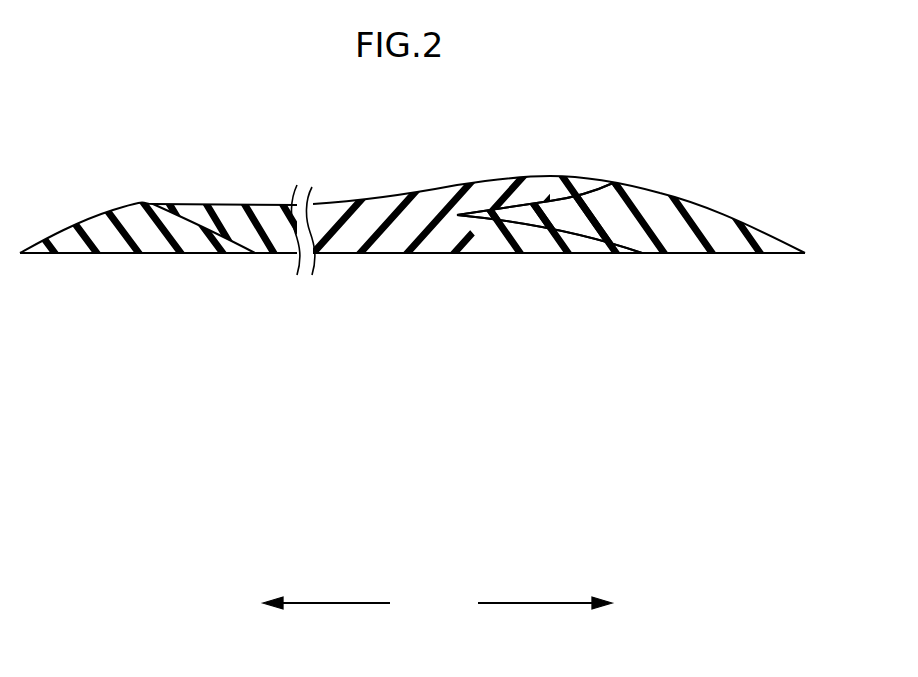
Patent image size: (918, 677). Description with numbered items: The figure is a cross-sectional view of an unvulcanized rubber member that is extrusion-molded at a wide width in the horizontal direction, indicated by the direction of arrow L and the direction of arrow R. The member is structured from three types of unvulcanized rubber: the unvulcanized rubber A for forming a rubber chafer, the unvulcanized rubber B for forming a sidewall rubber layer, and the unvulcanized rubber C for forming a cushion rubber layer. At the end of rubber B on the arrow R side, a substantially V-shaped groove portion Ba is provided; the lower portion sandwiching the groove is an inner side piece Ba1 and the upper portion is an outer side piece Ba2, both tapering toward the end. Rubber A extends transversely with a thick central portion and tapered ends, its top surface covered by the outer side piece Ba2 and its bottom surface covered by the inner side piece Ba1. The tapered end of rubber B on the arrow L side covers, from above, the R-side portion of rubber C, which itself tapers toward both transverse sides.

The unvulcanized rubber for forming a rubber chafer A is at (735, 242).
The unvulcanized rubber for forming a sidewall rubber layer B is at (388, 245).
The unvulcanized rubber for forming a cushion rubber layer C is at (120, 240).
The groove portion Ba is at (540, 205).
The inner side piece Ba1 is at (583, 243).
The outer side piece Ba2 is at (590, 184).
The arrow L direction L is at (327, 606).
The arrow R direction R is at (548, 606).